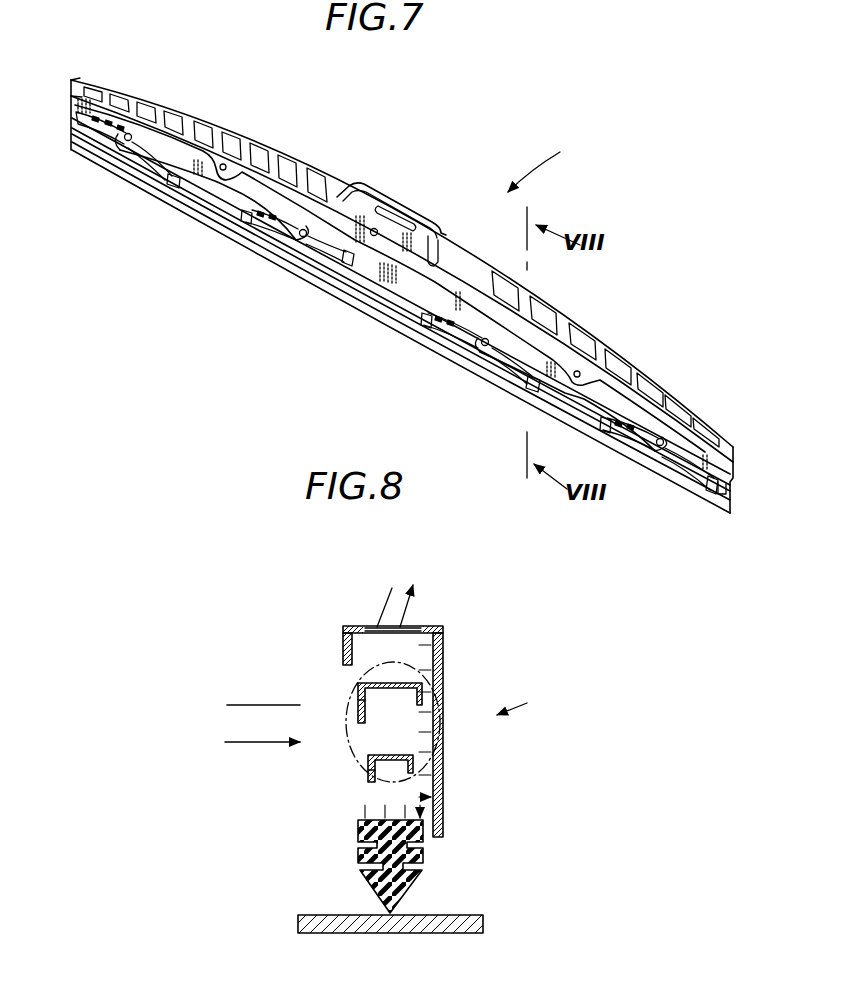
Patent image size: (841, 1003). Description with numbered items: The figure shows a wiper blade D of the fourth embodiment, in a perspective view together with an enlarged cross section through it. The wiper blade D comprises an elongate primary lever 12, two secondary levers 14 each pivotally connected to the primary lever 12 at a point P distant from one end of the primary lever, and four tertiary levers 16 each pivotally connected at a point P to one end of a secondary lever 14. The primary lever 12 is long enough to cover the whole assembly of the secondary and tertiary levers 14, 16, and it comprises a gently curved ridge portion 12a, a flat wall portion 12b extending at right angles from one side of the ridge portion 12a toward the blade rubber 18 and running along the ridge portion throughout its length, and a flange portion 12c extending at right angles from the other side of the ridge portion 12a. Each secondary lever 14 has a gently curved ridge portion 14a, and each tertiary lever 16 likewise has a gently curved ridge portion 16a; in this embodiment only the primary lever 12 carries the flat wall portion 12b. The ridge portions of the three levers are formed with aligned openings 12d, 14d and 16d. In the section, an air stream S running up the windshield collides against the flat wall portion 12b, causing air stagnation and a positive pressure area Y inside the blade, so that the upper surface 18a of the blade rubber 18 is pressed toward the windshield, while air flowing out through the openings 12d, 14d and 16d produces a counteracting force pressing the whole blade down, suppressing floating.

In FIG. 7, the primary lever 12 is at (342, 188).
In FIG. 8, the primary lever 12 is at (352, 625).
In FIG. 7, the ridge portion 12a is at (323, 161).
In FIG. 8, the ridge portion 12a is at (427, 630).
In FIG. 7, the flat wall portion 12b is at (404, 265).
In FIG. 8, the flat wall portion 12b is at (443, 703).
In FIG. 7, the flange portion 12c is at (553, 333).
In FIG. 8, the flange portion 12c is at (343, 640).
In FIG. 7, the openings 12d is at (243, 146).
In FIG. 8, the openings 12d is at (370, 625).
In FIG. 7, the secondary lever 14 is at (186, 144).
In FIG. 8, the secondary lever 14 is at (360, 686).
In FIG. 8, the ridge portion 14a is at (420, 677).
In FIG. 7, the openings 14d is at (250, 218).
In FIG. 8, the openings 14d is at (358, 703).
In FIG. 7, the tertiary lever 16 is at (100, 136).
In FIG. 8, the tertiary lever 16 is at (353, 777).
In FIG. 8, the ridge portion 16a is at (413, 757).
In FIG. 7, the openings 16d is at (170, 180).
In FIG. 8, the openings 16d is at (368, 767).
In FIG. 7, the blade rubber 18 is at (390, 320).
In FIG. 8, the blade rubber 18 is at (358, 825).
In FIG. 8, the upper surface 18a is at (403, 818).
In FIG. 7, the pivotal connection P is at (126, 141).
In FIG. 7, the wiper blade D is at (542, 160).
In FIG. 8, the wiper blade D is at (530, 697).
In FIG. 8, the air stream S is at (253, 740).
In FIG. 8, the positive pressure area Y is at (357, 793).